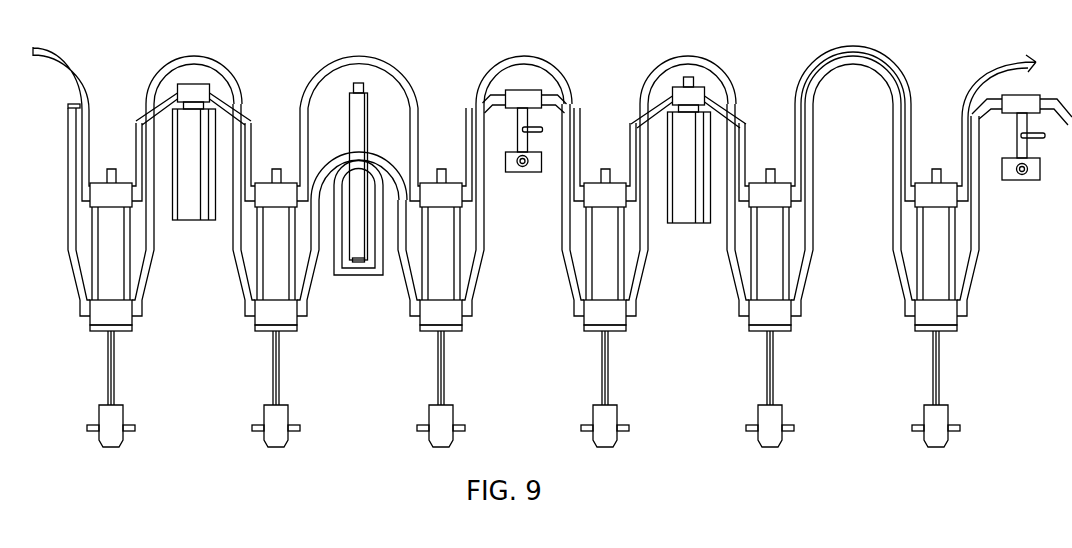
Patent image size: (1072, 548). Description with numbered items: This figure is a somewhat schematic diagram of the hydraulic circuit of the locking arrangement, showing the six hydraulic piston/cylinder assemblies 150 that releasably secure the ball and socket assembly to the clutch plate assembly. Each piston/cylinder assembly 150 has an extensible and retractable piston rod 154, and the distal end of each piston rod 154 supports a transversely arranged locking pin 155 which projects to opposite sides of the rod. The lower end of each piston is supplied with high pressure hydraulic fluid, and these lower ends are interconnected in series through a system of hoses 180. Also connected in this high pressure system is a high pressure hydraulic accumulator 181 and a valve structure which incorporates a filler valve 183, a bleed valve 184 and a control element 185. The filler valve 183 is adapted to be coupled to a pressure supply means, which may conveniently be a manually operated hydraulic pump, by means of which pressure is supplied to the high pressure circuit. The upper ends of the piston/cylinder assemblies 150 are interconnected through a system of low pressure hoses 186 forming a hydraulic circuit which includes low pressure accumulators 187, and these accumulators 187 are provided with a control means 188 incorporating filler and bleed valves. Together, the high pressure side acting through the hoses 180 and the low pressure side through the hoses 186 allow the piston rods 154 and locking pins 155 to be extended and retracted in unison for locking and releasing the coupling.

The hydraulic piston/cylinder assembly 150 is at (89, 329).
The piston rod 154 is at (113, 382).
The locking pin 155 is at (126, 428).
The hoses 180 is at (140, 290).
The high pressure hydraulic accumulator 181 is at (355, 100).
The filler valve 183 is at (506, 92).
The bleed valve 184 is at (514, 171).
The control element 185 is at (542, 133).
The low pressure hoses 186 is at (66, 53).
The low pressure accumulator 187 is at (192, 208).
The control means 188 is at (681, 97).